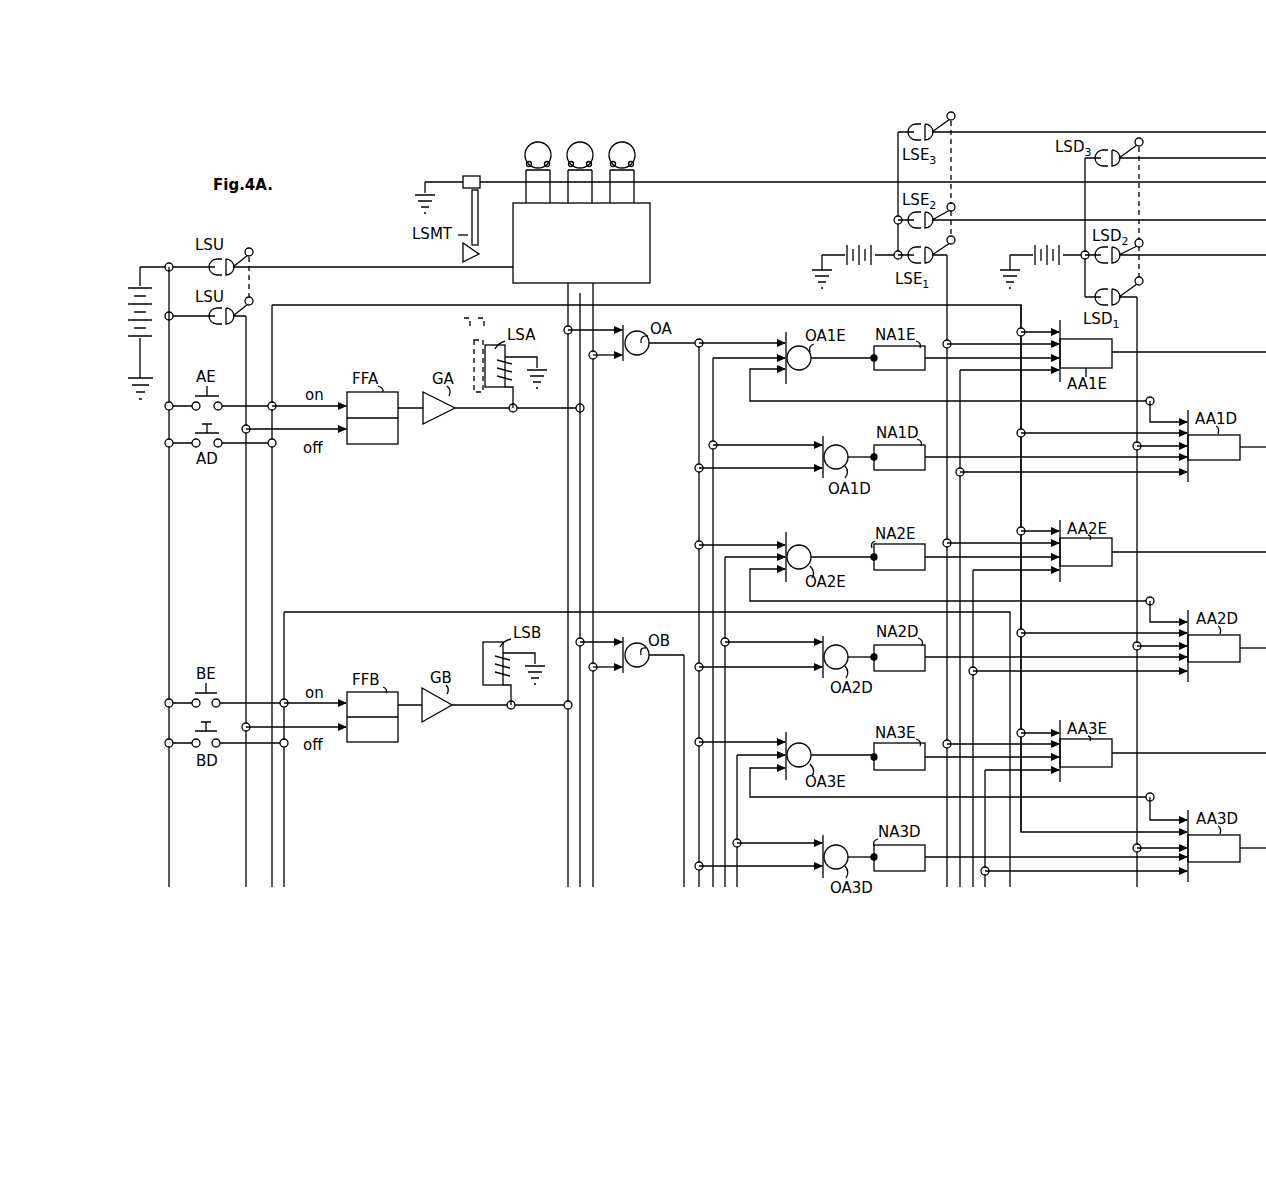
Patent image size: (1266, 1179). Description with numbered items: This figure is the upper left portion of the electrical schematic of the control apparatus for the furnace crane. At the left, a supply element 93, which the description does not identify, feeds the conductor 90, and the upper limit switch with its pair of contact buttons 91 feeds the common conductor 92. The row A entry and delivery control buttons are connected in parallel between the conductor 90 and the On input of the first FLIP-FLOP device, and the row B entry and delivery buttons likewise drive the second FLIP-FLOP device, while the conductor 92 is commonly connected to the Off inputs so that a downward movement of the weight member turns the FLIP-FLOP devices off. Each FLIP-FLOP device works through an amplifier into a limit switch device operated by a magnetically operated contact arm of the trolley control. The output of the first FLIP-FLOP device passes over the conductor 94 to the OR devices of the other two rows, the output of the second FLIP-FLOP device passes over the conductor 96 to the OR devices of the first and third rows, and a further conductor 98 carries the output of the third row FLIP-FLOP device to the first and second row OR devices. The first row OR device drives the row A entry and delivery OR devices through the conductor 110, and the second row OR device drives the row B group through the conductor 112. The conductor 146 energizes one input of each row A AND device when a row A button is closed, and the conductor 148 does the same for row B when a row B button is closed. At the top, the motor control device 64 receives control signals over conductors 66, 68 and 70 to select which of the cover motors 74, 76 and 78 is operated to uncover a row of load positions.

The battery 93 is at (139, 280).
The contact buttons 91 is at (209, 322).
The conductor 90 is at (169, 544).
The conductor 92 is at (246, 534).
The motor 74 is at (534, 143).
The motor 76 is at (583, 142).
The motor 78 is at (625, 142).
The motor control device 64 is at (650, 258).
The conductor 66 is at (568, 297).
The conductor 68 is at (580, 293).
The conductor 70 is at (593, 322).
The conductor 96 is at (568, 489).
The conductor 94 is at (580, 520).
The conductor 98 is at (593, 498).
The conductor 146 is at (744, 307).
The conductor 148 is at (379, 612).
The conductor 110 is at (699, 382).
The conductor 112 is at (684, 704).